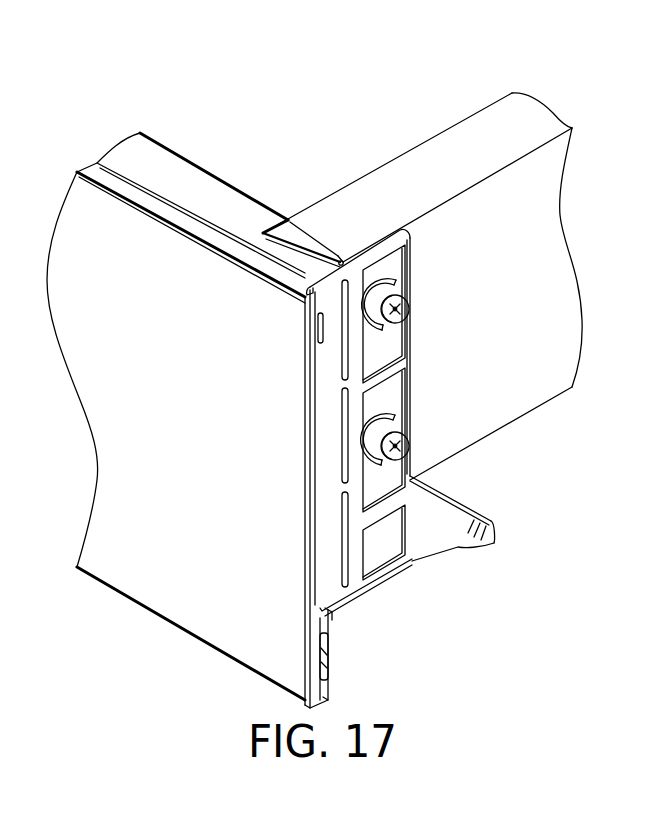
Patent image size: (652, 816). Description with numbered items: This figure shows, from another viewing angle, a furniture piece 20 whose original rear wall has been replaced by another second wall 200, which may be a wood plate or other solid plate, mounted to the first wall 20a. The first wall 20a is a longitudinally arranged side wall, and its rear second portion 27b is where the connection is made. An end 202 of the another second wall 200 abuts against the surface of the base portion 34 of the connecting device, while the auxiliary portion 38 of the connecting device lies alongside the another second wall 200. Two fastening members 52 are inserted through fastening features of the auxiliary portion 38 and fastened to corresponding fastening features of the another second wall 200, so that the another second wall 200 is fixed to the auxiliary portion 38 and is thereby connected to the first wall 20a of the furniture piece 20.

The furniture piece 20 is at (300, 140).
The first wall 20a is at (152, 140).
The second portion 27b is at (277, 257).
The base portion 34 is at (302, 252).
The end 202 is at (310, 242).
The auxiliary portion 38 is at (383, 245).
The fastening member 52 is at (397, 313).
The another second wall 200 is at (572, 396).